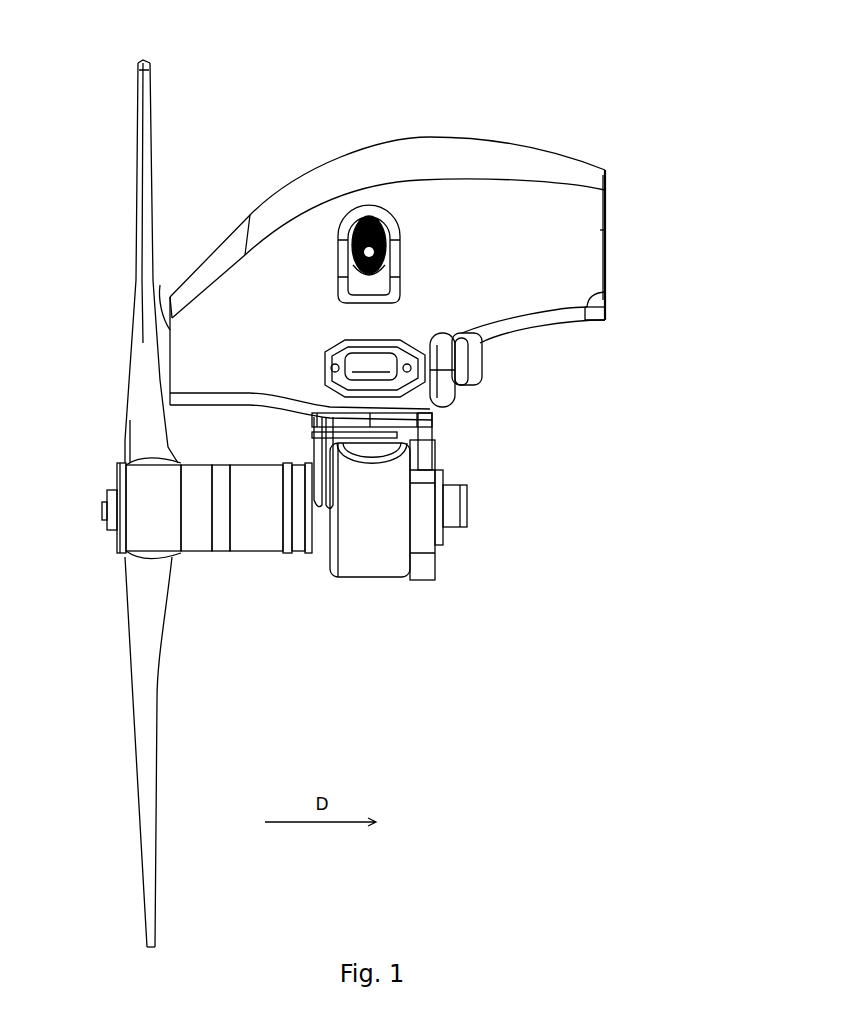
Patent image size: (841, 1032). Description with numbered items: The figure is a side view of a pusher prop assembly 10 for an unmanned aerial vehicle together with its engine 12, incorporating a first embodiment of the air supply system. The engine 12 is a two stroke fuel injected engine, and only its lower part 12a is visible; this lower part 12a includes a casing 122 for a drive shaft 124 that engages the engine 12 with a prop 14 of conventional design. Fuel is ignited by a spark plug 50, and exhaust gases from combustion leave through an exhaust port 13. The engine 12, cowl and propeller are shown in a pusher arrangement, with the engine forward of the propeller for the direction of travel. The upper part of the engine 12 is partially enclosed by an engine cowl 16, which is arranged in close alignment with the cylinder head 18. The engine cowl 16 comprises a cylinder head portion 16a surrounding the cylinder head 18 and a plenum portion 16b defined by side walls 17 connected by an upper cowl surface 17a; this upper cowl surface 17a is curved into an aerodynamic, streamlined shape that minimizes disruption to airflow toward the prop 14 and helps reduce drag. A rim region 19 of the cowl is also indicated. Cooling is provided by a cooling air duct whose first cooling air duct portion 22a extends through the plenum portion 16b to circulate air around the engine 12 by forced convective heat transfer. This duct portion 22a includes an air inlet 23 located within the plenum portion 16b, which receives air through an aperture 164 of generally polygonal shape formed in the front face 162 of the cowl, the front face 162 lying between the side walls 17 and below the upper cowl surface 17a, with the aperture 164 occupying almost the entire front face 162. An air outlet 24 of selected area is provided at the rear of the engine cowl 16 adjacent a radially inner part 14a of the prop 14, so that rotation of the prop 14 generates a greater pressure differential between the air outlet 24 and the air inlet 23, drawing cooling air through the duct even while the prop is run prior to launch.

The pusher prop assembly 10 is at (178, 557).
The engine 12 is at (432, 410).
The lower part of engine 12a is at (370, 558).
The casing 122 is at (253, 530).
The drive shaft 124 is at (103, 507).
The exhaust port 13 is at (395, 318).
The prop 14 is at (142, 393).
The radially inner part of prop 14a is at (142, 430).
The engine cowl 16 is at (587, 213).
The cylinder head portion 16a is at (480, 385).
The plenum portion 16b is at (497, 210).
The side walls 17 is at (607, 207).
The upper cowl surface 17a is at (443, 137).
The cylinder head 18 is at (313, 420).
The housing rim 19 is at (330, 165).
The first cooling air duct portion 22a is at (607, 222).
The air inlet 23 is at (608, 238).
The air outlet 24 is at (160, 285).
The spark plug 50 is at (370, 217).
The front face 162 is at (585, 320).
The aperture 164 is at (607, 287).